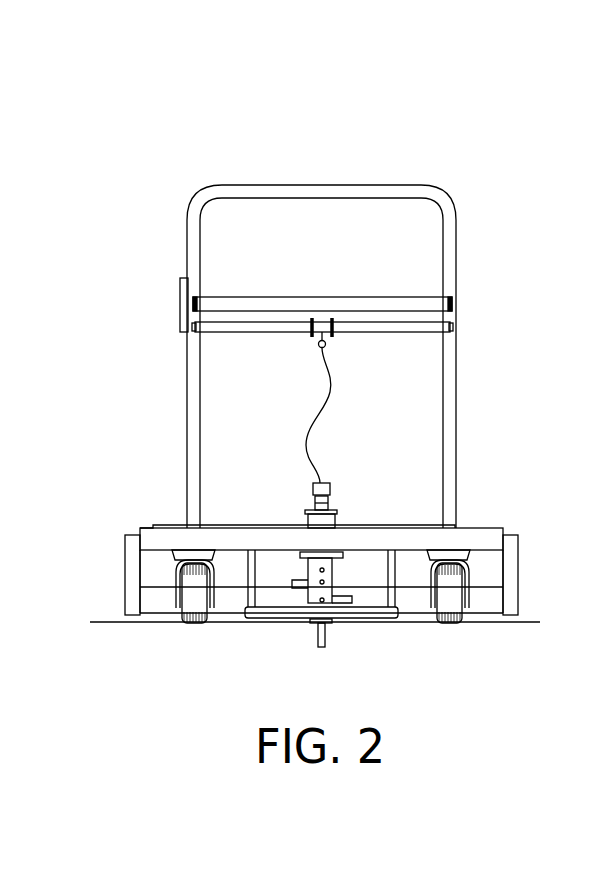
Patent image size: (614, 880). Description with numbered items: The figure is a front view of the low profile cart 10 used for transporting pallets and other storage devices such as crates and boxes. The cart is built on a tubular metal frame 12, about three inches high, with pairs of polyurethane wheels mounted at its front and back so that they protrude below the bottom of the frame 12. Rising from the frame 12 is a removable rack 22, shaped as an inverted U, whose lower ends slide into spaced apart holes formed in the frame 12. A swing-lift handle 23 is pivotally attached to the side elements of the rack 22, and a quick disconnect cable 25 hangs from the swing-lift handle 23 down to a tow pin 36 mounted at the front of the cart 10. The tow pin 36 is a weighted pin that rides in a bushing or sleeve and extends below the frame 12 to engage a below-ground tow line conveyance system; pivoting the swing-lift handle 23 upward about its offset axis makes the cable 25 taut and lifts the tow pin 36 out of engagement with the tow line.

The cart 10 is at (262, 119).
The frame 12 is at (510, 552).
The removable rack 22 is at (446, 197).
The swing-lift handle 23 is at (400, 328).
The quick disconnect cable 25 is at (330, 398).
The tow pin 36 is at (322, 648).